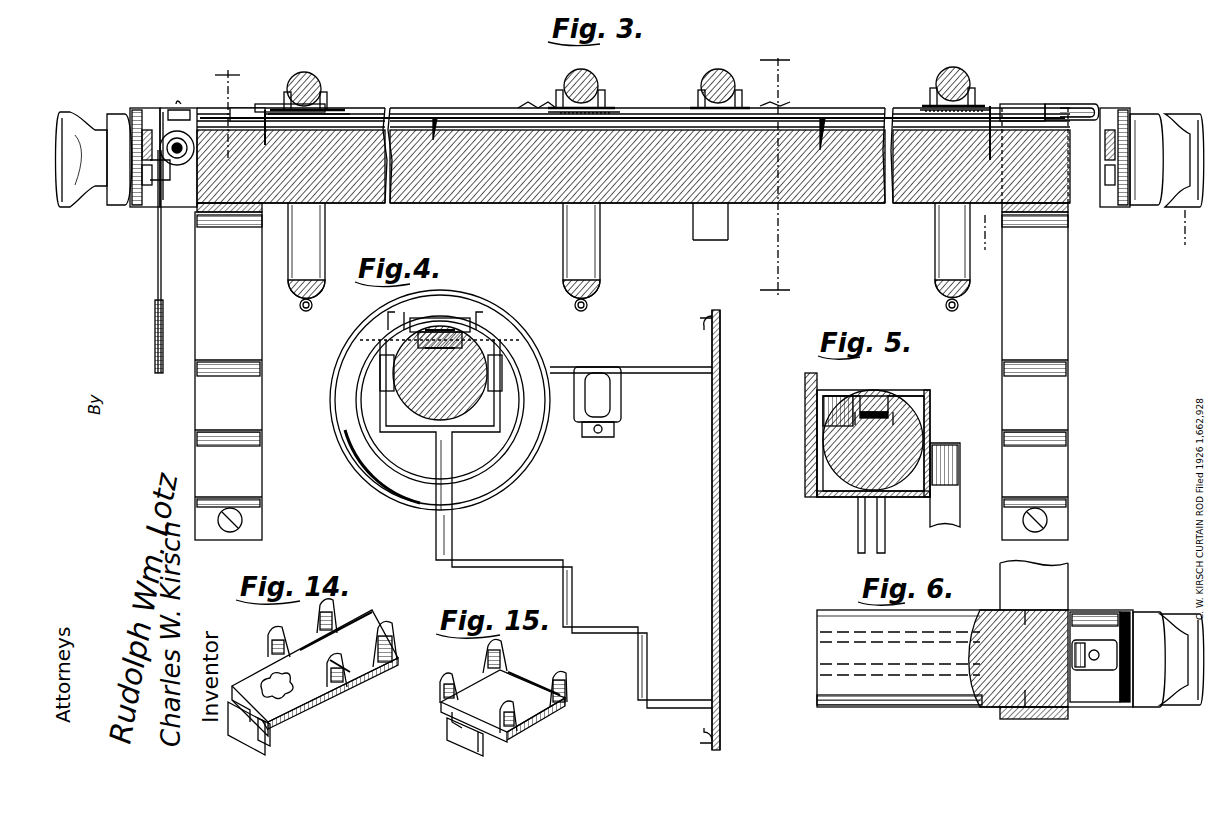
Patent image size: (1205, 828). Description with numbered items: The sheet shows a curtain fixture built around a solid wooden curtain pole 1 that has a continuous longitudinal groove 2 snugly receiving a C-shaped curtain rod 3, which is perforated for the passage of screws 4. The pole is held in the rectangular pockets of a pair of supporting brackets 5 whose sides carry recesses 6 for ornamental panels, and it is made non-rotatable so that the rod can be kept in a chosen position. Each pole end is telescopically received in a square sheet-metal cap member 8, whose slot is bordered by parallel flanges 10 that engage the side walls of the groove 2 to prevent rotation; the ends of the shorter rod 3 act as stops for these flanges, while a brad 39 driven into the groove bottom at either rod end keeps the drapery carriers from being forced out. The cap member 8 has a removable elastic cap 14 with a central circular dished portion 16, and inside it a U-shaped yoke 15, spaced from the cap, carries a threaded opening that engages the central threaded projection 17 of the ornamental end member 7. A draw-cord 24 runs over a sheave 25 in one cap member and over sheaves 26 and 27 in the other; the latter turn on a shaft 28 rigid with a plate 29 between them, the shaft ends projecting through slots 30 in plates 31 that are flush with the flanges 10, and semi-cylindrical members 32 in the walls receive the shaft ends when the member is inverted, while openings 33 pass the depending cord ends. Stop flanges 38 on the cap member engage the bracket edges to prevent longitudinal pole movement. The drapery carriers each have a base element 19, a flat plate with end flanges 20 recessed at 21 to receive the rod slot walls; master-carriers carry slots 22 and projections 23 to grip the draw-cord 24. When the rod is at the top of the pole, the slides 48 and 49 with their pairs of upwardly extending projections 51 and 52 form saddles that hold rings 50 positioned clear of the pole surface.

In FIG. 3, the curtain pole 1 is at (500, 204).
In FIG. 4, the curtain pole 1 is at (490, 350).
In FIG. 5, the curtain pole 1 is at (915, 420).
In FIG. 6, the curtain pole 1 is at (817, 700).
In FIG. 3, the longitudinal groove 2 is at (262, 113).
In FIG. 5, the longitudinal groove 2 is at (915, 405).
In FIG. 6, the longitudinal groove 2 is at (817, 675).
In FIG. 3, the curtain rod 3 is at (470, 126).
In FIG. 4, the curtain rod 3 is at (470, 336).
In FIG. 3, the screws 4 is at (433, 125).
In FIG. 3, the supporting brackets 5 is at (1080, 292).
In FIG. 4, the supporting brackets 5 is at (436, 540).
In FIG. 5, the supporting brackets 5 is at (945, 472).
In FIG. 6, the supporting brackets 5 is at (1034, 720).
In FIG. 3, the recesses 6 is at (1076, 226).
In FIG. 4, the recesses 6 is at (660, 495).
In FIG. 3, the ornamental end members 7 is at (66, 128).
In FIG. 6, the ornamental end members 7 is at (1170, 628).
In FIG. 3, the cap members 8 is at (258, 104).
In FIG. 4, the cap members 8 is at (384, 415).
In FIG. 5, the cap members 8 is at (905, 395).
In FIG. 6, the cap members 8 is at (1080, 612).
In FIG. 3, the parallel flanges 10 is at (243, 113).
In FIG. 4, the parallel flanges 10 is at (418, 335).
In FIG. 3, the removable cap 14 is at (134, 112).
In FIG. 3, the U-shaped yoke 15 is at (125, 205).
In FIG. 3, the central circular dished portion 16 is at (145, 160).
In FIG. 3, the central threaded projection 17 is at (143, 175).
In FIG. 3, the base element 19 is at (338, 109).
In FIG. 4, the base element 19 is at (432, 318).
In FIG. 14, the base element 19 is at (350, 680).
In FIG. 15, the base element 19 is at (478, 690).
In FIG. 4, the end flanges 20 is at (388, 345).
In FIG. 14, the end flanges 20 is at (240, 735).
In FIG. 15, the end flanges 20 is at (455, 740).
In FIG. 14, the recesses 21 is at (236, 690).
In FIG. 15, the recesses 21 is at (452, 718).
In FIG. 3, the slots 22 is at (535, 104).
In FIG. 14, the slots 22 is at (355, 682).
In FIG. 14, the projections 23 is at (272, 678).
In FIG. 3, the draw-cord 24 is at (470, 126).
In FIG. 4, the draw-cord 24 is at (432, 355).
In FIG. 5, the draw-cord 24 is at (868, 410).
In FIG. 3, the sheave 25 is at (1090, 108).
In FIG. 6, the sheave 25 is at (1095, 640).
In FIG. 3, the sheave 26 is at (180, 132).
In FIG. 5, the sheave 26 is at (823, 420).
In FIG. 5, the sheave 27 is at (892, 410).
In FIG. 3, the shaft 28 is at (197, 218).
In FIG. 4, the shaft 28 is at (505, 338).
In FIG. 5, the shaft 28 is at (805, 446).
In FIG. 3, the plate 29 is at (158, 250).
In FIG. 5, the plate 29 is at (835, 500).
In FIG. 3, the slots 30 is at (166, 112).
In FIG. 3, the plates 31 is at (172, 110).
In FIG. 5, the plates 31 is at (935, 430).
In FIG. 3, the semi-cylindrical members 32 is at (179, 102).
In FIG. 3, the openings 33 is at (160, 185).
In FIG. 4, the stop flanges 38 is at (380, 378).
In FIG. 6, the stop flanges 38 is at (1000, 600).
In FIG. 3, the brad 39 is at (267, 110).
In FIG. 3, the slide 48 is at (608, 113).
In FIG. 14, the slide 48 is at (350, 636).
In FIG. 3, the slide 49 is at (348, 113).
In FIG. 15, the slide 49 is at (535, 682).
In FIG. 3, the rings 50 is at (326, 246).
In FIG. 4, the rings 50 is at (395, 505).
In FIG. 3, the upwardly extending projections 51 is at (314, 84).
In FIG. 14, the upwardly extending projections 51 is at (277, 628).
In FIG. 15, the upwardly extending projections 51 is at (440, 680).
In FIG. 3, the upwardly extending projections 52 is at (326, 96).
In FIG. 14, the upwardly extending projections 52 is at (337, 606).
In FIG. 15, the upwardly extending projections 52 is at (503, 644).